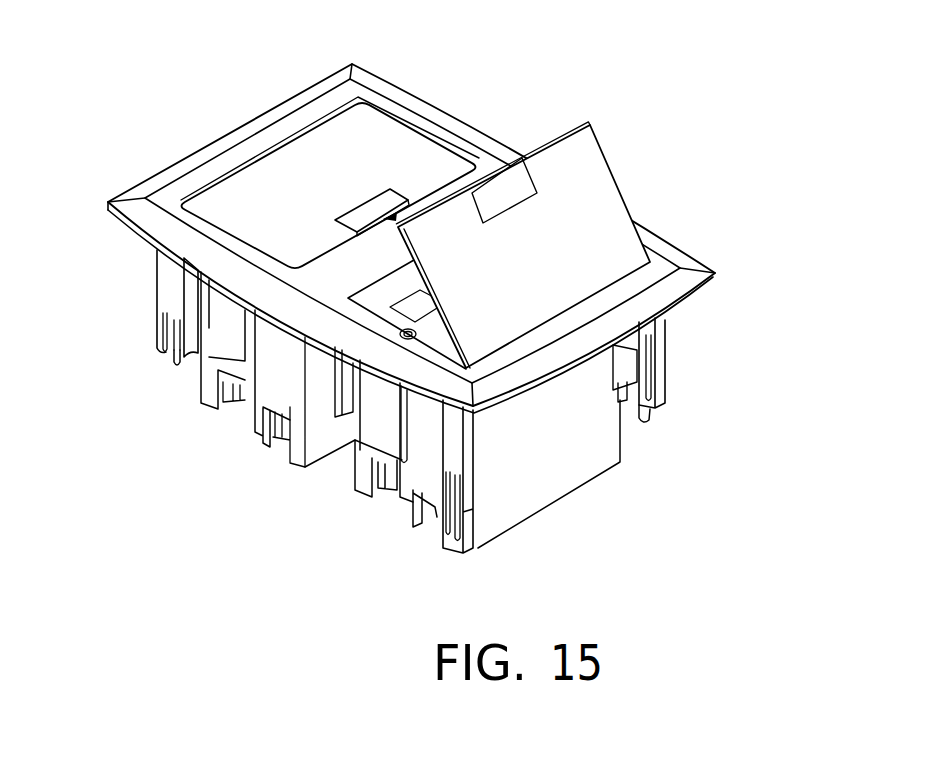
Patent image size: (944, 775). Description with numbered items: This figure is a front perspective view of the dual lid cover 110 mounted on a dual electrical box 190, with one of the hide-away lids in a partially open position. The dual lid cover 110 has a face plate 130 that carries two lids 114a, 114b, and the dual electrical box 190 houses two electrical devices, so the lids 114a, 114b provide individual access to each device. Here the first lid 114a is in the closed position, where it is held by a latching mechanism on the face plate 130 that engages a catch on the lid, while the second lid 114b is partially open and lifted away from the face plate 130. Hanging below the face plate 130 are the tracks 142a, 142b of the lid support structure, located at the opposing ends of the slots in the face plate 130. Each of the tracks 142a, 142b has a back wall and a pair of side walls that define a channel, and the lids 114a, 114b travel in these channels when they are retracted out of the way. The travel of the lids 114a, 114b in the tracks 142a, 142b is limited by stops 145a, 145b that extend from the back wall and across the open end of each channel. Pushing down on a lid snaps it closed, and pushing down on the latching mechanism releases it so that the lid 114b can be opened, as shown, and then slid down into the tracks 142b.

The dual lid cover 110 is at (287, 72).
The face plate 130 is at (661, 270).
The lid 114a is at (393, 167).
The lid 114b is at (570, 250).
The track 142a is at (150, 286).
The track 142b is at (482, 453).
The stop 145a is at (177, 364).
The stop 145b is at (650, 426).
The dual electrical box 190 is at (250, 443).